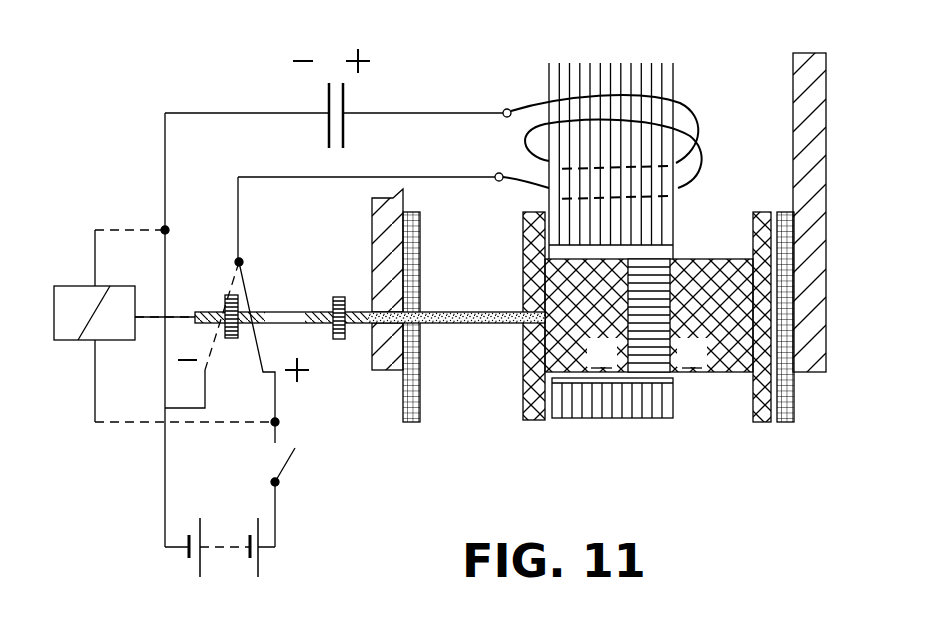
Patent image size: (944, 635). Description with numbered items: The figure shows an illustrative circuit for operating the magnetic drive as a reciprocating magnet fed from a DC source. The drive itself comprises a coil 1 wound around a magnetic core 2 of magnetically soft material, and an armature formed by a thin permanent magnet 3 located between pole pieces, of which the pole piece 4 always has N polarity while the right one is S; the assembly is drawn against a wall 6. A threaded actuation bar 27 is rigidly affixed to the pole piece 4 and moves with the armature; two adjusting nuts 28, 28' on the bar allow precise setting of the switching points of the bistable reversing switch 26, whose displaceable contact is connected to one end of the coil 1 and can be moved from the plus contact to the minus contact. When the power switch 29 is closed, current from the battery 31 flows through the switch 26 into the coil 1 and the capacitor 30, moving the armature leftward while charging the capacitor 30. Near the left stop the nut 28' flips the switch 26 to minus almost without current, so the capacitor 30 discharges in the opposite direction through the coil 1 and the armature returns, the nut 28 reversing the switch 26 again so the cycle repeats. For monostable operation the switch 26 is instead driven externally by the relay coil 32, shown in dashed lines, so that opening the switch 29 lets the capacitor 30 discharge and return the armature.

The coil 1 is at (517, 159).
The magnetic core 2 is at (650, 78).
The permanent magnet 3 is at (658, 268).
The pole piece 4 is at (506, 395).
The housing wall 6 is at (812, 135).
The bistable reversing switch 26 is at (258, 414).
The actuation bar 27 is at (461, 312).
The adjusting nut 28 is at (206, 303).
The adjusting nut 28' is at (327, 292).
The power switch 29 is at (323, 501).
The capacitor 30 is at (395, 152).
The battery 31 is at (243, 602).
The relay coil 32 is at (68, 286).